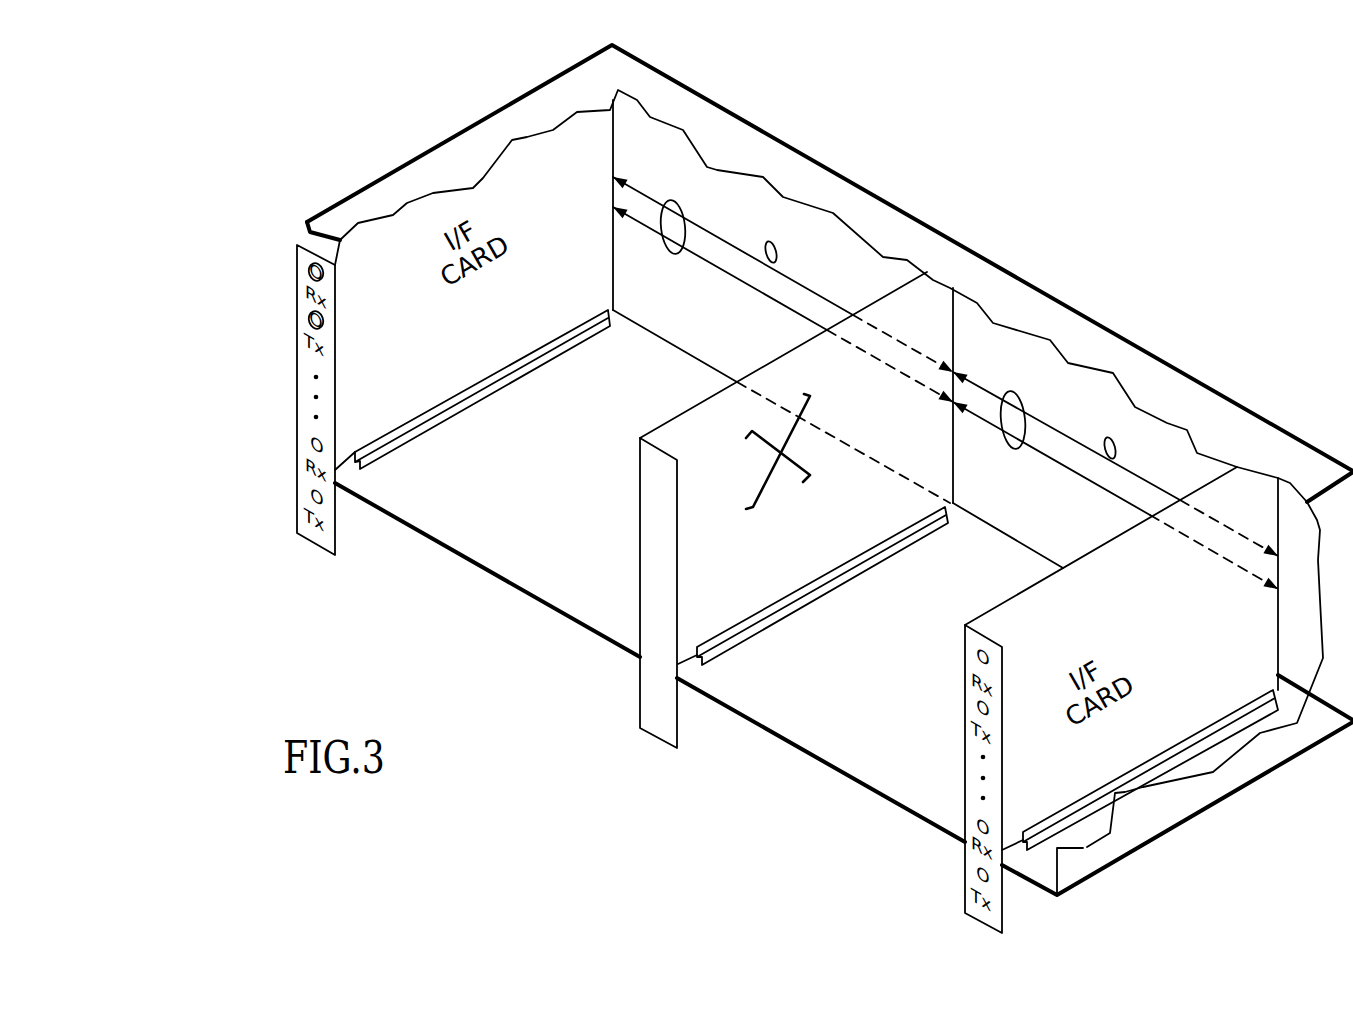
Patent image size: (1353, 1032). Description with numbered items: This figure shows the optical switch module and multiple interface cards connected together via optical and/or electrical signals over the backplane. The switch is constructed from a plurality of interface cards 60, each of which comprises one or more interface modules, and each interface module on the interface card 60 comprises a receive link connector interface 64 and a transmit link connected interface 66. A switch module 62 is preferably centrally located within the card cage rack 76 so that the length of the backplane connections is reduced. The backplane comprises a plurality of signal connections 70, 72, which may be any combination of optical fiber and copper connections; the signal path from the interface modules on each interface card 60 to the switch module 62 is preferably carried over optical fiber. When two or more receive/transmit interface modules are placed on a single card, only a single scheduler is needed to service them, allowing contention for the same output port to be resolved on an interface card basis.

The interface card 60 is at (358, 413).
The switch module 62 is at (690, 630).
The receive link connector interface 64 is at (313, 271).
The transmit link connected interface 66 is at (313, 326).
The signal connection 70 is at (673, 200).
The signal connection 72 is at (1020, 392).
The card cage rack 76 is at (1032, 282).